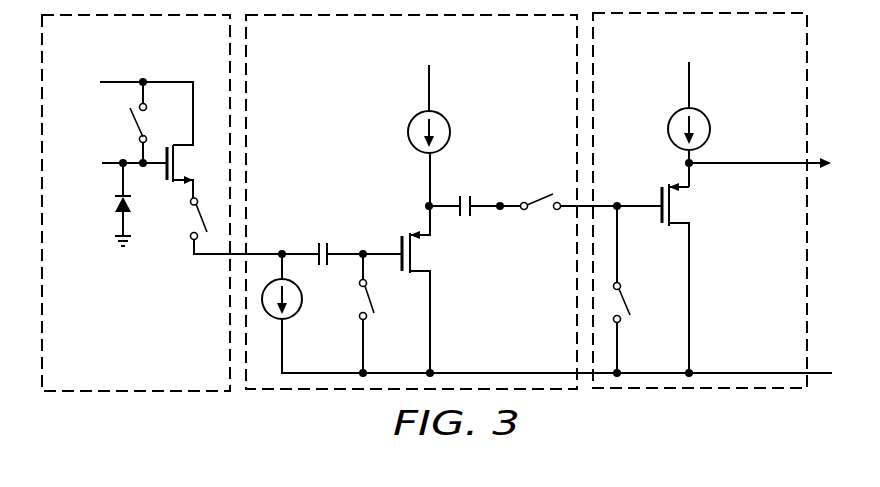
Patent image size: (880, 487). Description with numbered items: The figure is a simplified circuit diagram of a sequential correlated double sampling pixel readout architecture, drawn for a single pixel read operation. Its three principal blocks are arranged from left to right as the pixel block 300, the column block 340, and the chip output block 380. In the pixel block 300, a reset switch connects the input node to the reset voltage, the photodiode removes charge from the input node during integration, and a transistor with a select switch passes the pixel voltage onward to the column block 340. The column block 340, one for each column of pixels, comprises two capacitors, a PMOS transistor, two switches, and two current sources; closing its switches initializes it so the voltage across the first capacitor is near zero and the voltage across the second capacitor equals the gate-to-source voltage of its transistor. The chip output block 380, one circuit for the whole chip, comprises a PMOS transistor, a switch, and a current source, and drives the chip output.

The pixel block 300 is at (137, 402).
The column block 340 is at (329, 402).
The chip output block 380 is at (703, 402).